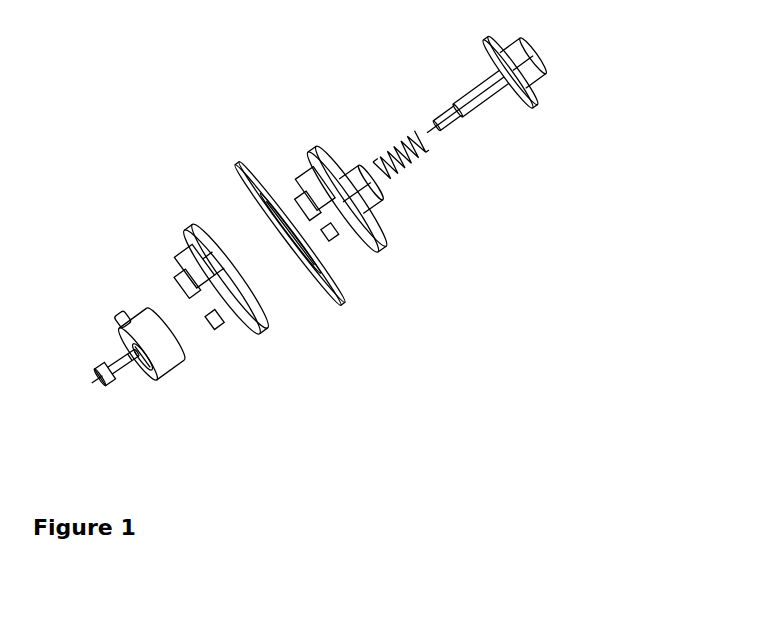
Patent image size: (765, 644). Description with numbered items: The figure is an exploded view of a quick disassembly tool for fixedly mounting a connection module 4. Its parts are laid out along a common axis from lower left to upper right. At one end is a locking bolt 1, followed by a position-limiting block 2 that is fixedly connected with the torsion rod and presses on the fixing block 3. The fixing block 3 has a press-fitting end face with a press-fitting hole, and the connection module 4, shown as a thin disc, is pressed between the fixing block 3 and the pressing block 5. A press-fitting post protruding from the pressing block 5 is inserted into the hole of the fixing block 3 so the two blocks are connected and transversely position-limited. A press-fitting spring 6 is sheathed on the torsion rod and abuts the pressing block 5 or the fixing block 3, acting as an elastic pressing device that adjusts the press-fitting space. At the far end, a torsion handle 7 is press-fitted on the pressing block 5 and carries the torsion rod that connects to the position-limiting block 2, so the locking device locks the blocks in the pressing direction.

The locking bolt 1 is at (103, 378).
The position-limiting block 2 is at (156, 345).
The fixing block 3 is at (230, 320).
The connection module 4 is at (338, 303).
The pressing block 5 is at (370, 240).
The press-fitting spring 6 is at (405, 160).
The torsion handle 7 is at (498, 92).